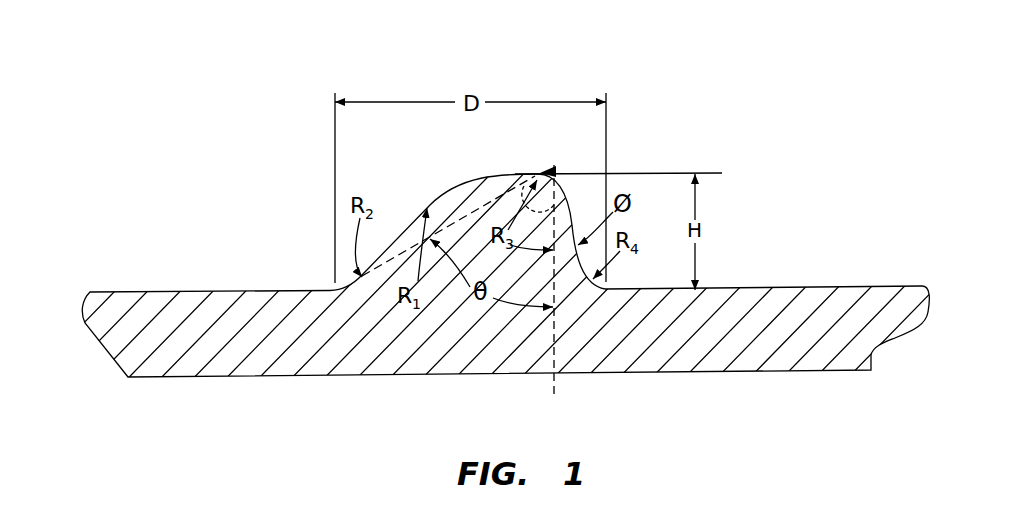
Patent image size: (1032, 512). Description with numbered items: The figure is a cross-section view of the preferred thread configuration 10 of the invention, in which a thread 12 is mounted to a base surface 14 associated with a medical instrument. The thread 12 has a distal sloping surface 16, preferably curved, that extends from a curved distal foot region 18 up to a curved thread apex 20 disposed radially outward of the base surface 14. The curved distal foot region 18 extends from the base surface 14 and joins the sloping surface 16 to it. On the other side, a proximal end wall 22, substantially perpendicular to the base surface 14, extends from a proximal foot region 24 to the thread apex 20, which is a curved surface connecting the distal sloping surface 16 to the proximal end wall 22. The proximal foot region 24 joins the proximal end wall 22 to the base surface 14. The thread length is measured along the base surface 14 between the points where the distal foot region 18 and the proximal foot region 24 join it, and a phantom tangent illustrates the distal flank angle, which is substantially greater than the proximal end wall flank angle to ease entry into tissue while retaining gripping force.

The weld bead joint structure 10 is at (520, 220).
The thread 12 is at (488, 203).
The base surface 14 is at (173, 291).
The distal sloping surface 16 is at (417, 205).
The curved distal foot region 18 is at (352, 283).
The thread apex 20 is at (540, 173).
The proximal end wall 22 is at (603, 173).
The proximal foot region 24 is at (603, 283).